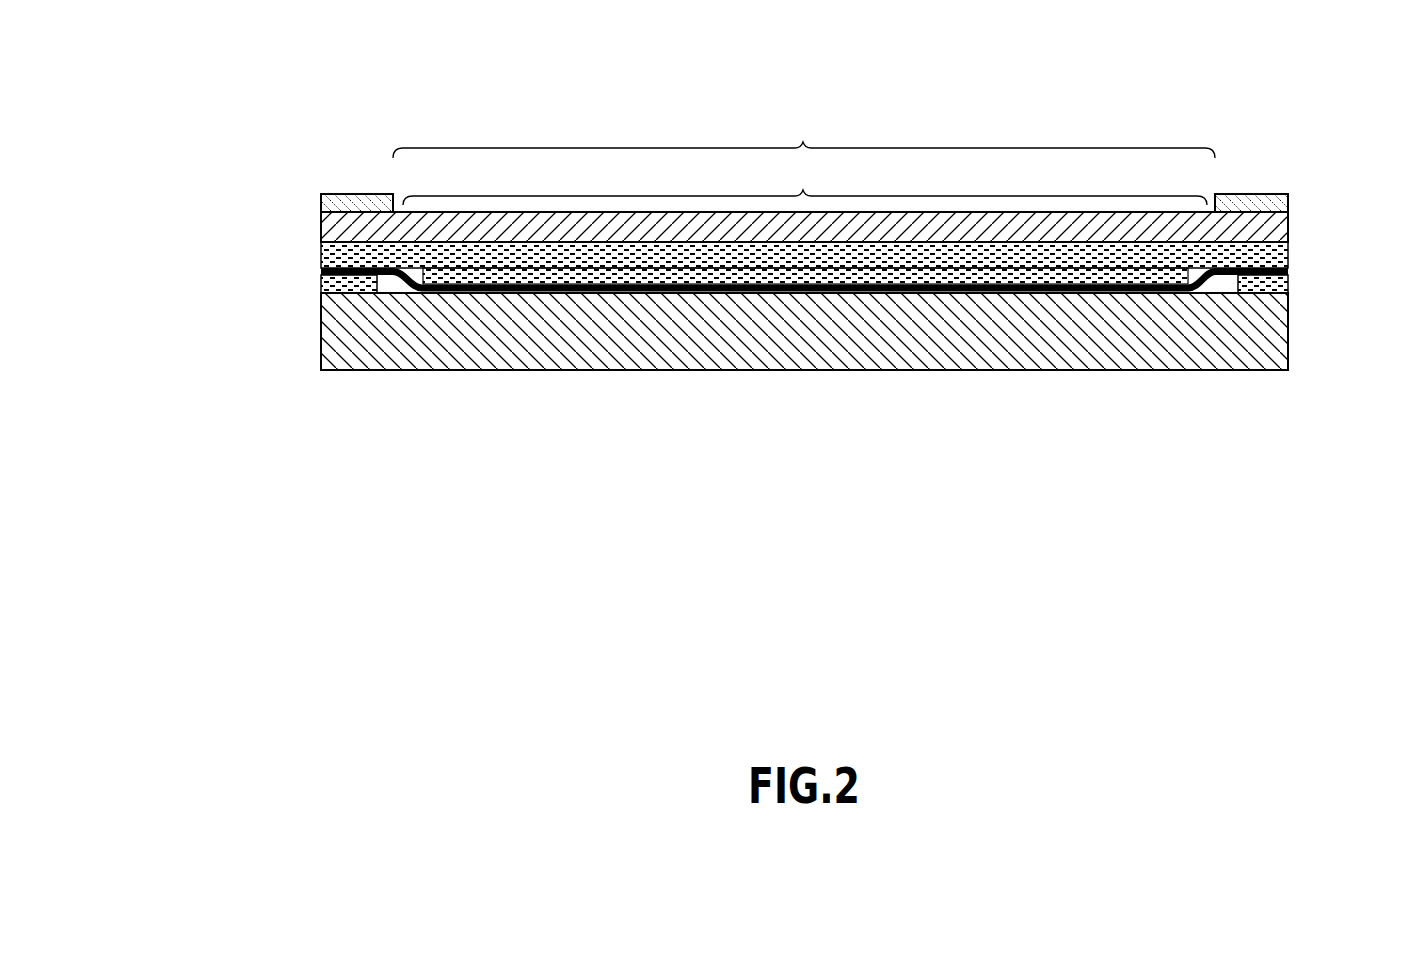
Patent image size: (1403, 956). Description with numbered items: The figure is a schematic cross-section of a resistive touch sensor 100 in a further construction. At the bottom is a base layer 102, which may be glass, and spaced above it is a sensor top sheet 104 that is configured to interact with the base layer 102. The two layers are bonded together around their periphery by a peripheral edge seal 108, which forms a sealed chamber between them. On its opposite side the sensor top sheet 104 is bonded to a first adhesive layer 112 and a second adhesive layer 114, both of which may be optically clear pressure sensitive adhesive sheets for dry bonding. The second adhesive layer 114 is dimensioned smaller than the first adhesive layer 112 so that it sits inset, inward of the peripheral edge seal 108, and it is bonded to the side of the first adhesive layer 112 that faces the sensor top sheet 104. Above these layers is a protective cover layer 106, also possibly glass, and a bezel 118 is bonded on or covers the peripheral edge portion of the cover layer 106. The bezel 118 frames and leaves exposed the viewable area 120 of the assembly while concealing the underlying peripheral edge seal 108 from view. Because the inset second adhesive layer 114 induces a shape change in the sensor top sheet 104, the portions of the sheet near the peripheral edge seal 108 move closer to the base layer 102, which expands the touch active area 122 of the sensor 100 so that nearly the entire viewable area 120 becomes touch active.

The resistive touch sensor 100 is at (288, 107).
The base layer 102 is at (1288, 329).
The sensor top sheet 104 is at (321, 272).
The protective cover layer 106 is at (1288, 225).
The peripheral edge seal 108 is at (1288, 283).
The first adhesive layer 112 is at (1288, 253).
The second adhesive layer 114 is at (805, 270).
The bezel 118 is at (357, 193).
The viewable area 120 is at (804, 136).
The touch active area 122 is at (805, 184).